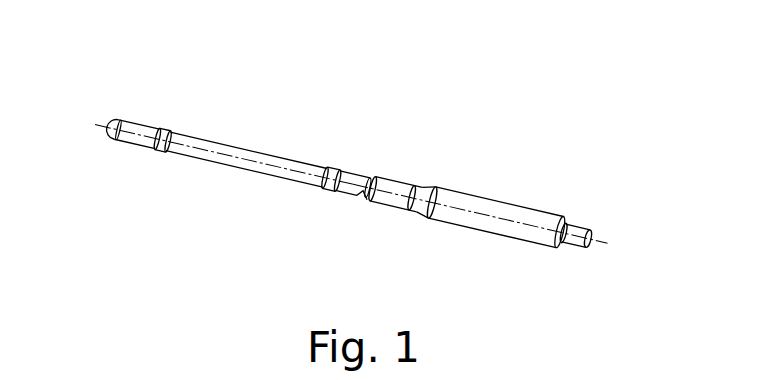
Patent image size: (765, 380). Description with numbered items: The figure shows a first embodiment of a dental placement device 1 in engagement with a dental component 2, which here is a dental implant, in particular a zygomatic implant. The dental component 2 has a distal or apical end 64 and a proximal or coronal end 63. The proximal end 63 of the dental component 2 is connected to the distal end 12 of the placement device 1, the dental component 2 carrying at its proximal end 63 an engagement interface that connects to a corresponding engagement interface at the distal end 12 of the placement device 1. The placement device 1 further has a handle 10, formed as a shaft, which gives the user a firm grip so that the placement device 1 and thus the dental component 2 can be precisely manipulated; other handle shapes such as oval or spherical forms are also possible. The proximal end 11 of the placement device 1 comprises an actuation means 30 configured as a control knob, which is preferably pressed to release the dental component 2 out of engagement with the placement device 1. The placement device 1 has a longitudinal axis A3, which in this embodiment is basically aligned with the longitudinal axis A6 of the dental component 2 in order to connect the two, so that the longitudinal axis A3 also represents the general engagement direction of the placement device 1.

The placement device 1 is at (475, 231).
The dental component 2 is at (262, 120).
The handle 10 is at (470, 232).
The proximal end 11 is at (570, 258).
The distal end 12 is at (372, 208).
The actuation means 30 is at (580, 220).
The proximal end 63 is at (370, 182).
The distal end 64 is at (106, 117).
The longitudinal axis A3 is at (607, 245).
The longitudinal axis A6 is at (107, 128).